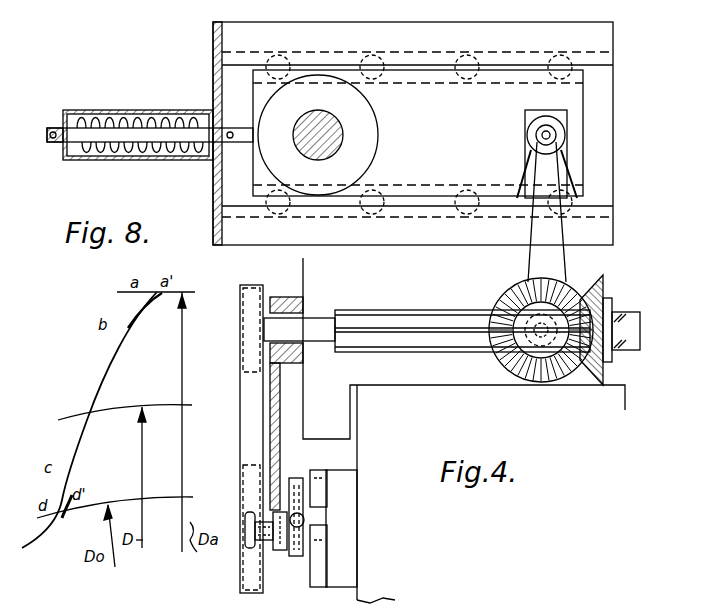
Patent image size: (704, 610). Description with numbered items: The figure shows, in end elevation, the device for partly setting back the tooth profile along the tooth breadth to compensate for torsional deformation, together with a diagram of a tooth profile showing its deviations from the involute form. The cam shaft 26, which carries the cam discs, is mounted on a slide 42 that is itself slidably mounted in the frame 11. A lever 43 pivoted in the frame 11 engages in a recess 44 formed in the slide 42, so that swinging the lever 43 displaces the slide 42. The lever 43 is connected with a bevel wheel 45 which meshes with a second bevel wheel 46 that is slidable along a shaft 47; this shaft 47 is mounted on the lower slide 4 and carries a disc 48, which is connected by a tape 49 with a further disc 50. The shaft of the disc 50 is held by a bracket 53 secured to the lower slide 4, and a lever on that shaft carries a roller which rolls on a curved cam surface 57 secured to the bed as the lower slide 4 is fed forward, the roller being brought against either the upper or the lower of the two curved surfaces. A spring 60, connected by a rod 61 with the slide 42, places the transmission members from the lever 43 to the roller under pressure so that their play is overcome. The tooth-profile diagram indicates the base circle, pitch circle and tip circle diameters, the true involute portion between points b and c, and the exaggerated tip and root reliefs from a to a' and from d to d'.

The lower slide 4 is at (303, 290).
The frame 11 is at (441, 245).
The cam shaft 26 is at (328, 145).
The slide 42 is at (413, 133).
The lever 43 is at (560, 262).
The recess 44 is at (524, 158).
The bevel wheel 45 is at (505, 287).
The bevel wheel 46 is at (607, 290).
The shaft 47 is at (376, 312).
The disc 48 is at (252, 298).
The tape 49 is at (255, 418).
The disc 50 is at (262, 560).
The bracket 53 is at (281, 452).
The curved cam surface 57 is at (318, 588).
The spring 60 is at (118, 155).
The rod 61 is at (128, 126).